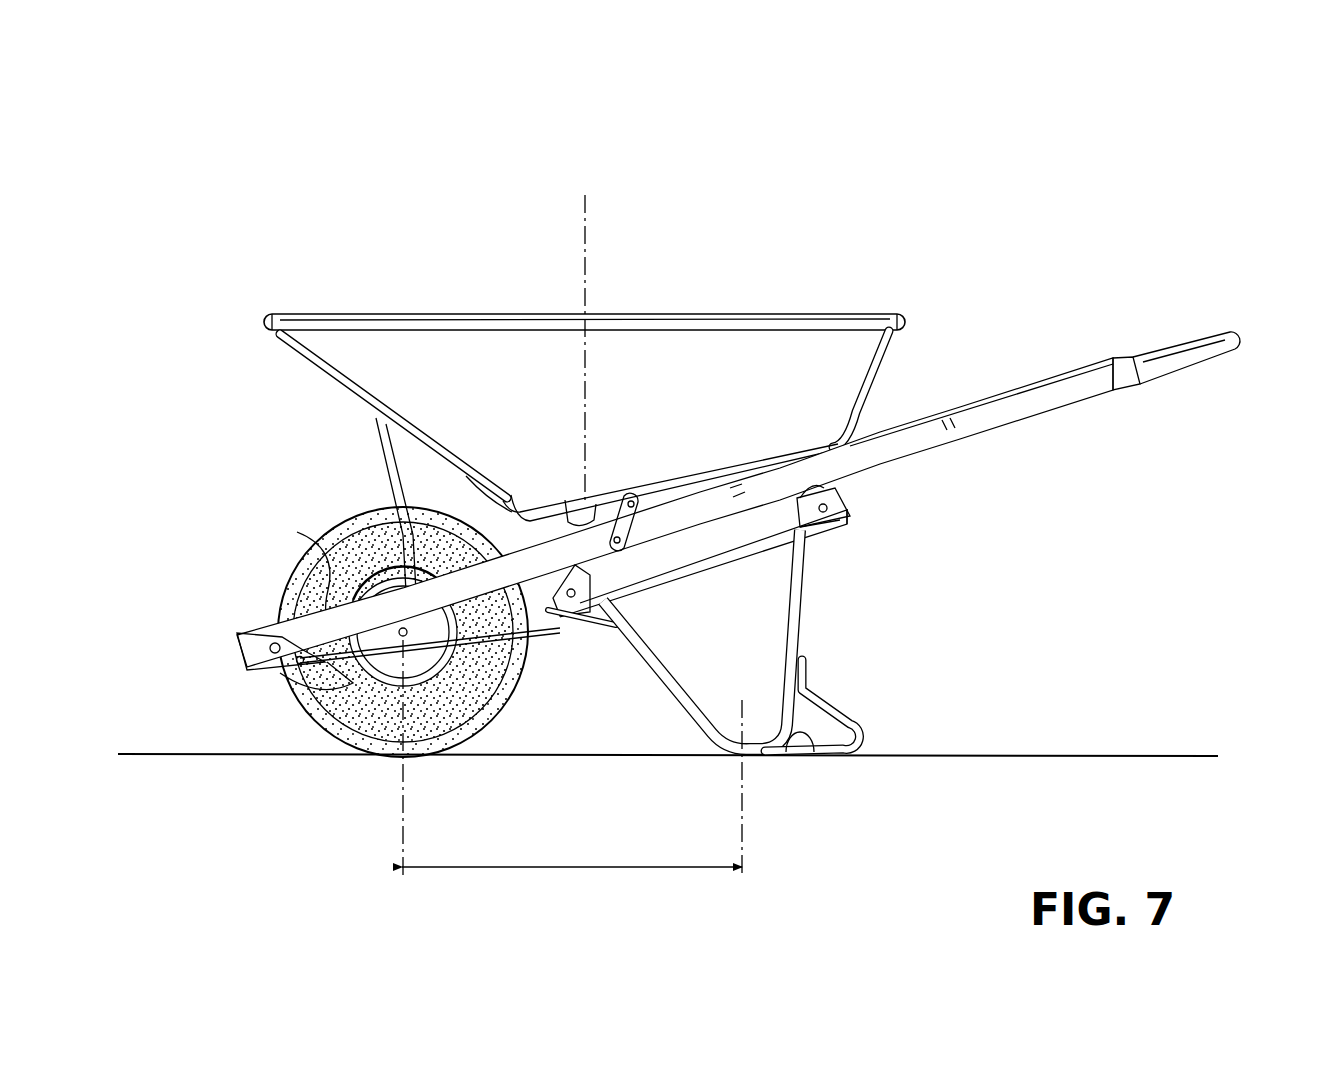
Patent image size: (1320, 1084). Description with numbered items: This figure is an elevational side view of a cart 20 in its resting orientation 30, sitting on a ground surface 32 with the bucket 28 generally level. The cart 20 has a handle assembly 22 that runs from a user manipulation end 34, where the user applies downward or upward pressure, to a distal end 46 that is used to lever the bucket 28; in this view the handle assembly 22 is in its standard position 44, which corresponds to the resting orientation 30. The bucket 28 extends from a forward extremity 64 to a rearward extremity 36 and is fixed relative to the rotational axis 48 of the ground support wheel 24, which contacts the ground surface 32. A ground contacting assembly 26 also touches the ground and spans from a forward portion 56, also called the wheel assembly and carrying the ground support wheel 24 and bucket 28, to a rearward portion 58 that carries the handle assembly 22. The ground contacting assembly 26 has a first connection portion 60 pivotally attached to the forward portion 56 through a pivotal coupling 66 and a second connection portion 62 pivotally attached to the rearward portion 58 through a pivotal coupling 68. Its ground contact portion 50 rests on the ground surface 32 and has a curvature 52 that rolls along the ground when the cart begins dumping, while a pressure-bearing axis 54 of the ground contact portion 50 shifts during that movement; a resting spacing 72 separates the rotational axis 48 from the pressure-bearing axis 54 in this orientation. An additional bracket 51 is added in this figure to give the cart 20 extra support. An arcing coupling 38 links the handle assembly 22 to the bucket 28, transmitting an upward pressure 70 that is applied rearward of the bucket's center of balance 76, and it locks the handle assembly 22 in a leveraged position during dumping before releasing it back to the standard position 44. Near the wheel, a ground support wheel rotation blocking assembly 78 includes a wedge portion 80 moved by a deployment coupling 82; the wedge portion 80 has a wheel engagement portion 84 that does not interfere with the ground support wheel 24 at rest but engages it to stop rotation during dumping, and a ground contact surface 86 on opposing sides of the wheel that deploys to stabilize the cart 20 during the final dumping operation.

The cart 20 is at (1052, 240).
The handle assembly 22 is at (766, 470).
The ground support wheel 24 is at (586, 380).
The ground contacting assembly 26 is at (806, 630).
The bucket 28 is at (400, 314).
The resting orientation 30 is at (1013, 165).
The ground surface 32 is at (1131, 754).
The user manipulation end 34 is at (1236, 337).
The rearward extremity 36 is at (906, 318).
The arcing coupling 38 is at (578, 500).
The standard position 44 is at (1102, 400).
The distal end 46 is at (666, 524).
The rotational axis 48 is at (362, 510).
The ground contact portion 50 is at (707, 738).
The additional bracket 51 is at (861, 738).
The curvature 52 is at (812, 762).
The pressure-bearing axis 54 is at (748, 835).
The forward portion 56 is at (296, 571).
The rearward portion 58 is at (1002, 442).
The first connection portion 60 is at (588, 640).
The second connection portion 62 is at (834, 528).
The forward extremity 64 is at (246, 326).
The pivotal coupling 66 is at (522, 505).
The pivotal coupling 68 is at (823, 504).
The upward pressure 70 is at (632, 494).
The resting spacing 72 is at (568, 868).
The center of balance 76 is at (583, 215).
The ground support wheel rotation blocking assembly 78 is at (322, 710).
The wedge portion 80 is at (252, 661).
The deployment coupling 82 is at (544, 680).
The wheel engagement portion 84 is at (240, 627).
The ground contact surface 86 is at (327, 712).